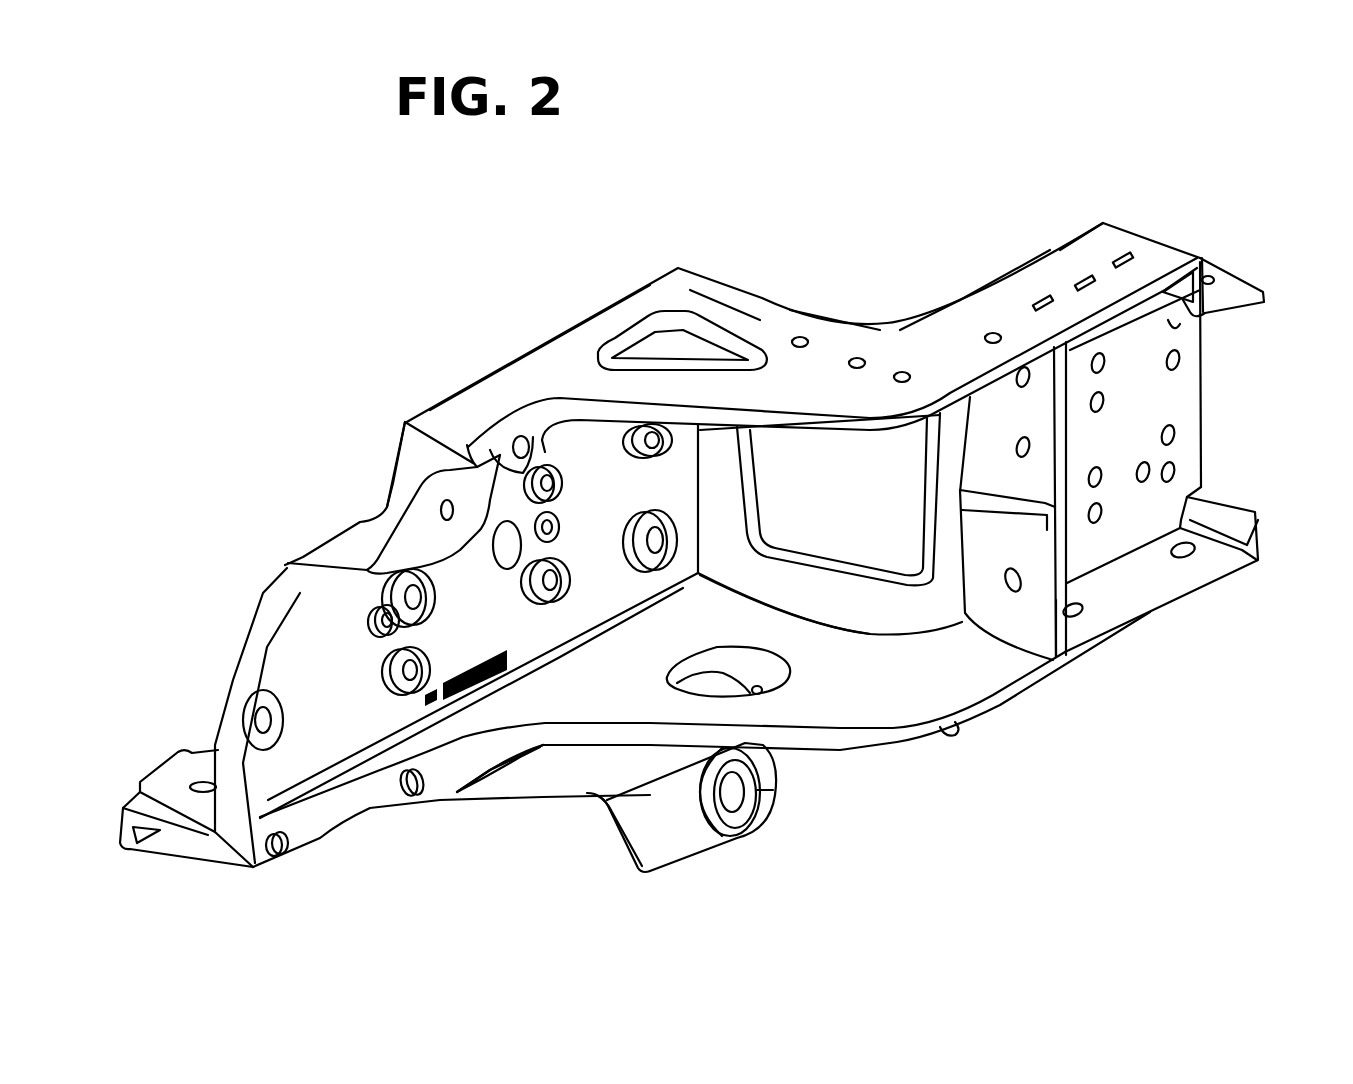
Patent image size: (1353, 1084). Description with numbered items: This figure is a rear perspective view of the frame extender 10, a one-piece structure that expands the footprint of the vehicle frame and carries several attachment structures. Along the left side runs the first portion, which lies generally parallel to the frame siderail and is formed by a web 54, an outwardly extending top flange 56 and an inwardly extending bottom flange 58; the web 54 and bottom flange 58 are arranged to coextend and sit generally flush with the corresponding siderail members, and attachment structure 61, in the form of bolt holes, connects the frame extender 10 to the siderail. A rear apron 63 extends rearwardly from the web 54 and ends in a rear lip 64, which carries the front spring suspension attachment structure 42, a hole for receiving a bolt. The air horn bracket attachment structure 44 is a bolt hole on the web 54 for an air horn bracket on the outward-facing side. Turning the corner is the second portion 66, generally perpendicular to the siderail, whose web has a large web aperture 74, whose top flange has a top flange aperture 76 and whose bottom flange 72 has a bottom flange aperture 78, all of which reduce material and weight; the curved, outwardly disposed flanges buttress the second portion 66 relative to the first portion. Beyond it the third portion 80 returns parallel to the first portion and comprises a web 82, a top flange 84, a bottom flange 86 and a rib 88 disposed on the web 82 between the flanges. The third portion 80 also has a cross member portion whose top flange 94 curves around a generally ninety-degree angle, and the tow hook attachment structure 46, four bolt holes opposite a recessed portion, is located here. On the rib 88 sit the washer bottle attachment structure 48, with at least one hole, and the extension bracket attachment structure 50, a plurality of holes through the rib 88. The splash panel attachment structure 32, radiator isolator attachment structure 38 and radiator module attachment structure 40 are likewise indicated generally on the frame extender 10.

The frame extender 10 is at (707, 510).
The splash panel attachment structure 32 is at (835, 265).
The radiator isolator attachment structure 38 is at (1071, 215).
The radiator module attachment structure 40 is at (327, 434).
The front spring suspension attachment structure 42 is at (807, 861).
The air horn bracket attachment structure 44 is at (932, 298).
The tow hook attachment structure 46 is at (1200, 393).
The washer bottle attachment structure 48 is at (1007, 589).
The extension bracket attachment structure 50 is at (820, 457).
The web 54 is at (334, 803).
The top flange 56 is at (540, 342).
The bottom flange 58 is at (168, 775).
The attachment structure 61 is at (291, 572).
The rear apron 63 is at (504, 807).
The rear lip 64 is at (691, 841).
The second portion 66 is at (736, 262).
The bottom flange 72 is at (796, 713).
The web aperture 74 is at (838, 499).
The top flange aperture 76 is at (673, 291).
The bottom flange aperture 78 is at (632, 804).
The third portion 80 is at (1002, 229).
The web 82 is at (1189, 362).
The top flange 84 is at (1094, 182).
The bottom flange 86 is at (1161, 579).
The rib 88 is at (1092, 676).
The top flange 94 is at (1238, 267).